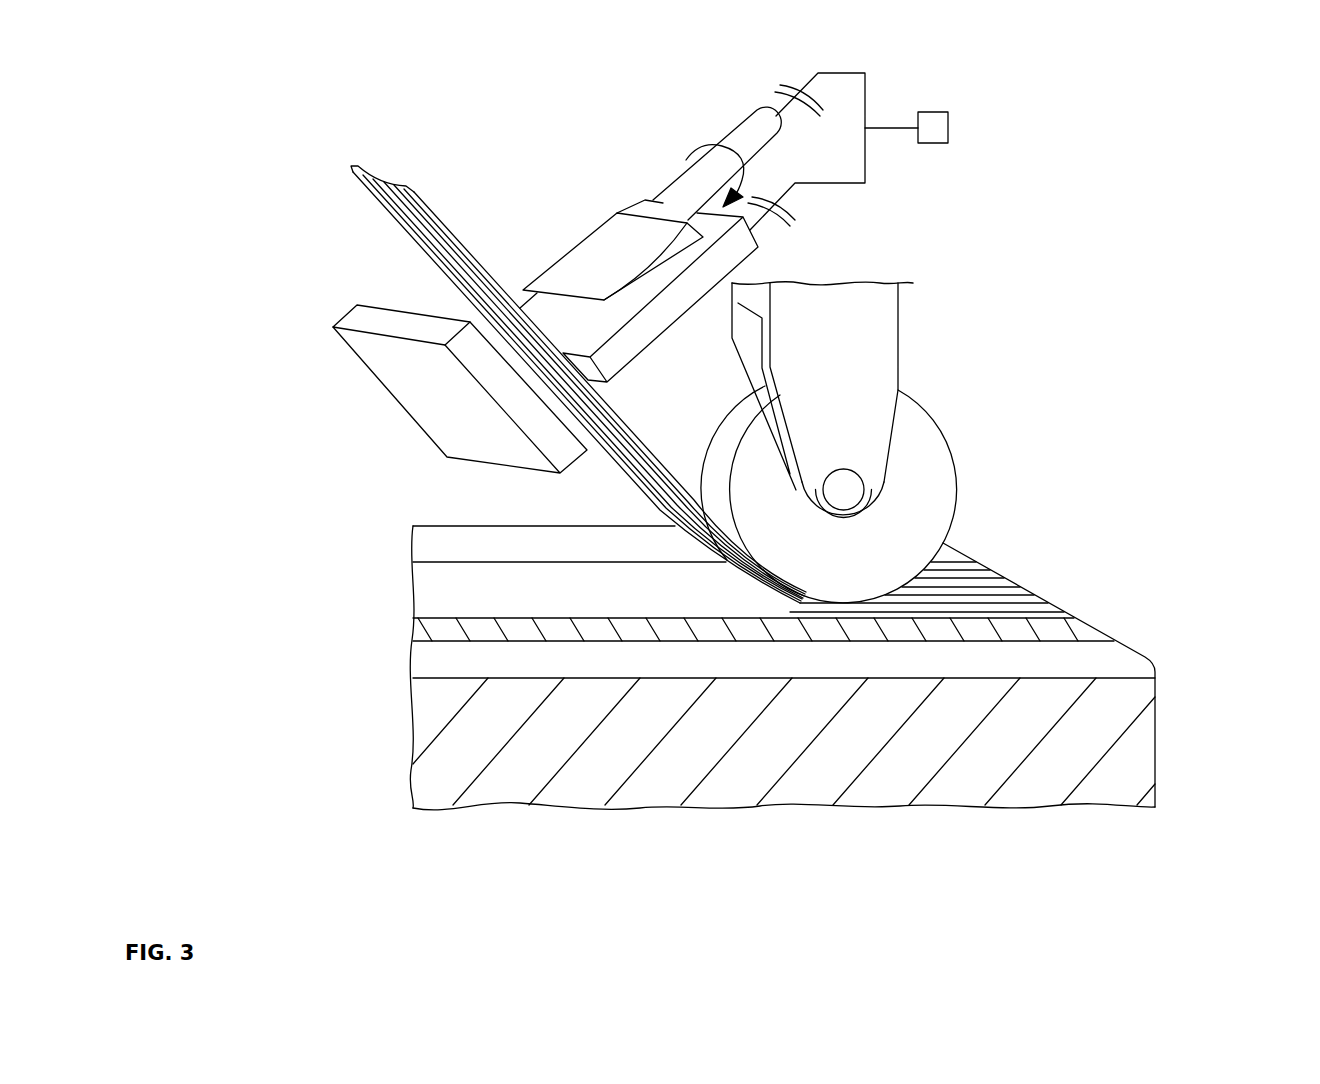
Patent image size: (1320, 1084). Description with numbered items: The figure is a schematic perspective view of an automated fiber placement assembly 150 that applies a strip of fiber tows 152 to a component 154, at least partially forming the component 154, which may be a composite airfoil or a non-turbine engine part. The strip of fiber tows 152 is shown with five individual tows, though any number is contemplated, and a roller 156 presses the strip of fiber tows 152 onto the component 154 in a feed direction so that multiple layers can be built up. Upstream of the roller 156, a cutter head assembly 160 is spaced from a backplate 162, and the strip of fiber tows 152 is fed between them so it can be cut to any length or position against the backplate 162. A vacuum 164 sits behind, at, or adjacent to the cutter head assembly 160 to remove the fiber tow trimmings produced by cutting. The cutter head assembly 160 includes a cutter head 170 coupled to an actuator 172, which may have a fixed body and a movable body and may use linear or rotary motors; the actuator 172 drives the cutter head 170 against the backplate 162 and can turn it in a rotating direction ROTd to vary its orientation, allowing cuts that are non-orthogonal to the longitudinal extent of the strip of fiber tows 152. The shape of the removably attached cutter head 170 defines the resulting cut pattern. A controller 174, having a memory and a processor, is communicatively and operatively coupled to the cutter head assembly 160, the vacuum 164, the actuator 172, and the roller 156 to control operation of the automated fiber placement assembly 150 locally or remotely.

The automated fiber placement assembly 150 is at (1100, 178).
The strip of fiber tows 152 is at (395, 203).
The component 154 is at (430, 710).
The roller 156 is at (922, 480).
The cutter head assembly 160 is at (643, 191).
The backplate 162 is at (398, 375).
The vacuum 164 is at (718, 262).
The cutter head 170 is at (572, 270).
The actuator 172 is at (743, 147).
The controller 174 is at (935, 135).
The rotating direction ROTd is at (698, 142).